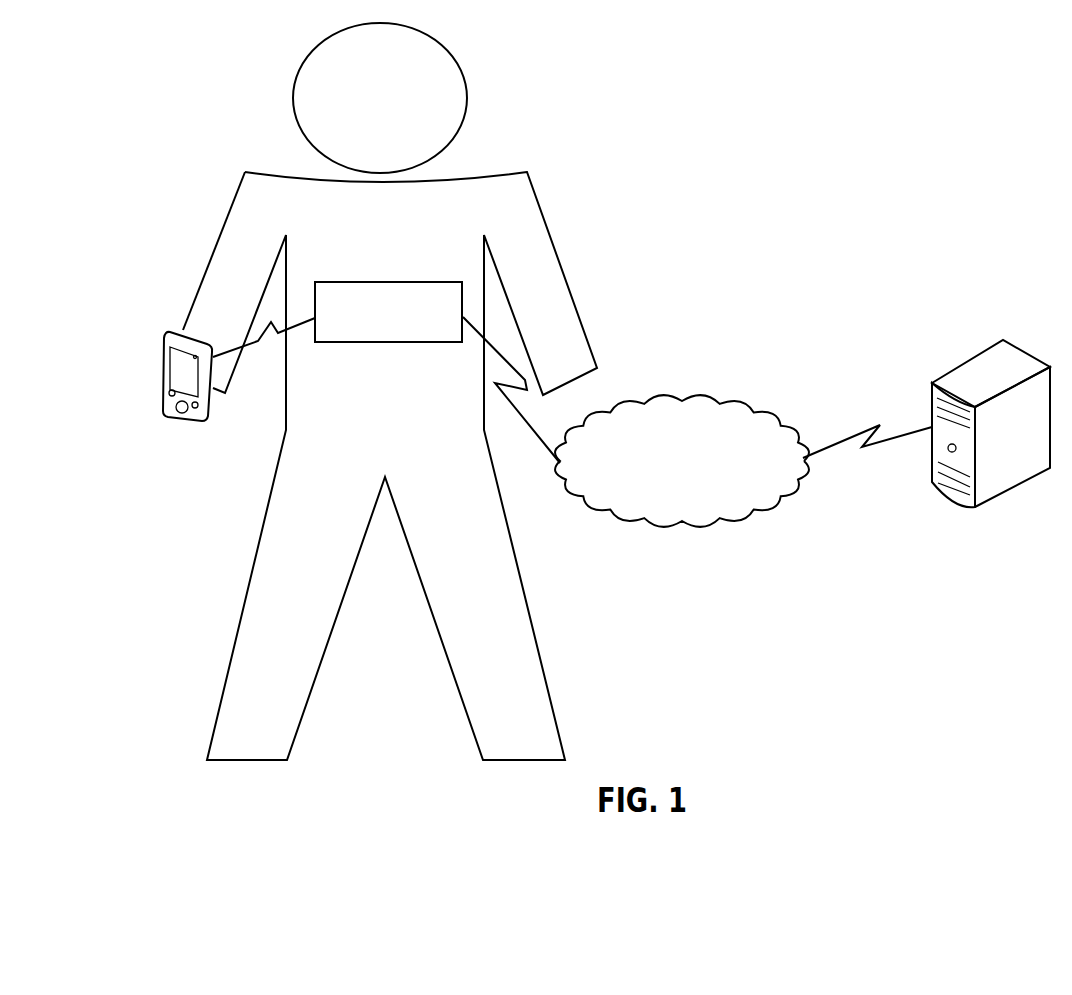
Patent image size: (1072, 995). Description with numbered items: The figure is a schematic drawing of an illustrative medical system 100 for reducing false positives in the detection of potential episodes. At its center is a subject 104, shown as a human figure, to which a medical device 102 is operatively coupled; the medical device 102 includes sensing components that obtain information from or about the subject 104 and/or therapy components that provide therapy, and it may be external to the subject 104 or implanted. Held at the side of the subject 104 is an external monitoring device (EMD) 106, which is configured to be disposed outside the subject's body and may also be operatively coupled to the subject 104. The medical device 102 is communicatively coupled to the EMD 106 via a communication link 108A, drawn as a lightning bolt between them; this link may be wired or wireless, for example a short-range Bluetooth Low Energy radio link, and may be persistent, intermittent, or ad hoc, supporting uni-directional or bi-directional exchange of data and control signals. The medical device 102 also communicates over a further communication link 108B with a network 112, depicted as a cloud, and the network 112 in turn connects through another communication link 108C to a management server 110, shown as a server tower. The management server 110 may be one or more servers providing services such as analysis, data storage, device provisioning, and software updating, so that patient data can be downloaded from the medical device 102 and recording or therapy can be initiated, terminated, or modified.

The medical system 100 is at (198, 58).
The medical device 102 is at (388, 282).
The subject 104 is at (513, 552).
The external monitoring device (EMD) 106 is at (165, 380).
The communication link 108A is at (268, 350).
The communication link 108B is at (532, 430).
The communication link 108C is at (862, 462).
The management server 110 is at (932, 386).
The network 112 is at (710, 400).